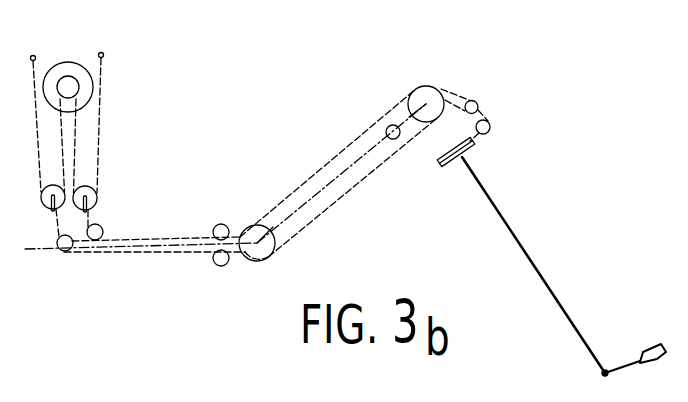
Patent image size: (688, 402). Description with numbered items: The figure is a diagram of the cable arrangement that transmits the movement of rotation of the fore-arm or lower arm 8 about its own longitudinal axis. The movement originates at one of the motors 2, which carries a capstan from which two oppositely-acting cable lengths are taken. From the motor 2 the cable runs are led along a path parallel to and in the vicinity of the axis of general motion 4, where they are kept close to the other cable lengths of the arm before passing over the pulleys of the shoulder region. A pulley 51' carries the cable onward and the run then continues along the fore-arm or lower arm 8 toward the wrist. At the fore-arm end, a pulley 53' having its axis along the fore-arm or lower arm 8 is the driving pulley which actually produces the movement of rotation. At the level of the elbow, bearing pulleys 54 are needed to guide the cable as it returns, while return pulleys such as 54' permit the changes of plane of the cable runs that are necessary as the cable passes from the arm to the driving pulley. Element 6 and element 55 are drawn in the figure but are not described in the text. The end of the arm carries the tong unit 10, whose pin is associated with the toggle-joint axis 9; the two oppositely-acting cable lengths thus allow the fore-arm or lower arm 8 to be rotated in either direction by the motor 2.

The motor 2 is at (68, 64).
The axis of general motion 4 is at (42, 249).
The inclined conveyor belt section 6 is at (297, 206).
The fore-arm or lower arm 8 is at (518, 251).
The axis 9 is at (603, 374).
The tong unit 10 is at (621, 361).
The pulley 51' is at (406, 80).
The pulley 53' is at (488, 161).
The bearing pulleys 54 is at (383, 164).
The return pulleys 54' is at (490, 112).
The element 55 is at (517, 5).